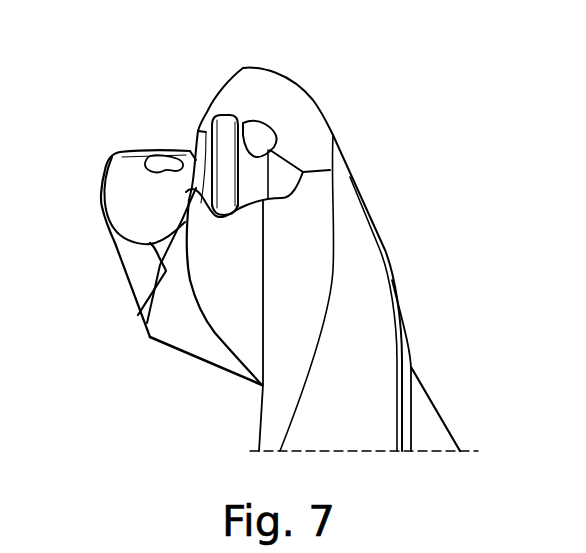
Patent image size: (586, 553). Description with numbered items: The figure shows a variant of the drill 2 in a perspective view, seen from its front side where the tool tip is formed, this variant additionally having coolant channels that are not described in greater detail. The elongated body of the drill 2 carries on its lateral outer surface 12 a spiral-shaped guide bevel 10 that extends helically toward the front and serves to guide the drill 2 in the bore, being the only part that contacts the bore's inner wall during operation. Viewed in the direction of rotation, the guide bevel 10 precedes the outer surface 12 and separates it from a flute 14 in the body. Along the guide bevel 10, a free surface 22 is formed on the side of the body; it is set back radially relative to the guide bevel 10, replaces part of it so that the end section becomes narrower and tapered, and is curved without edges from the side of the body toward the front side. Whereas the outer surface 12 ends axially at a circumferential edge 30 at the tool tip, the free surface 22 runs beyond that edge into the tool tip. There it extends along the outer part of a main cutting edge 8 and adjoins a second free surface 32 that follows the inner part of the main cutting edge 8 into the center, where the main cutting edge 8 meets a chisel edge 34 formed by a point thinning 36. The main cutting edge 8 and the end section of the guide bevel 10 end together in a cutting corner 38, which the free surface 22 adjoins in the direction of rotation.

The drill 2 is at (152, 118).
The main cutting edge 8 is at (230, 82).
The guide bevel 10 is at (147, 298).
The lateral outer surface 12 is at (137, 263).
The flute 14 is at (187, 340).
The free surface 22 is at (160, 237).
The circumferential edge 30 is at (130, 265).
The second free surface 32 is at (310, 120).
The chisel edge 34 is at (198, 127).
The point thinning 36 is at (229, 133).
The cutting corner 38 is at (170, 275).